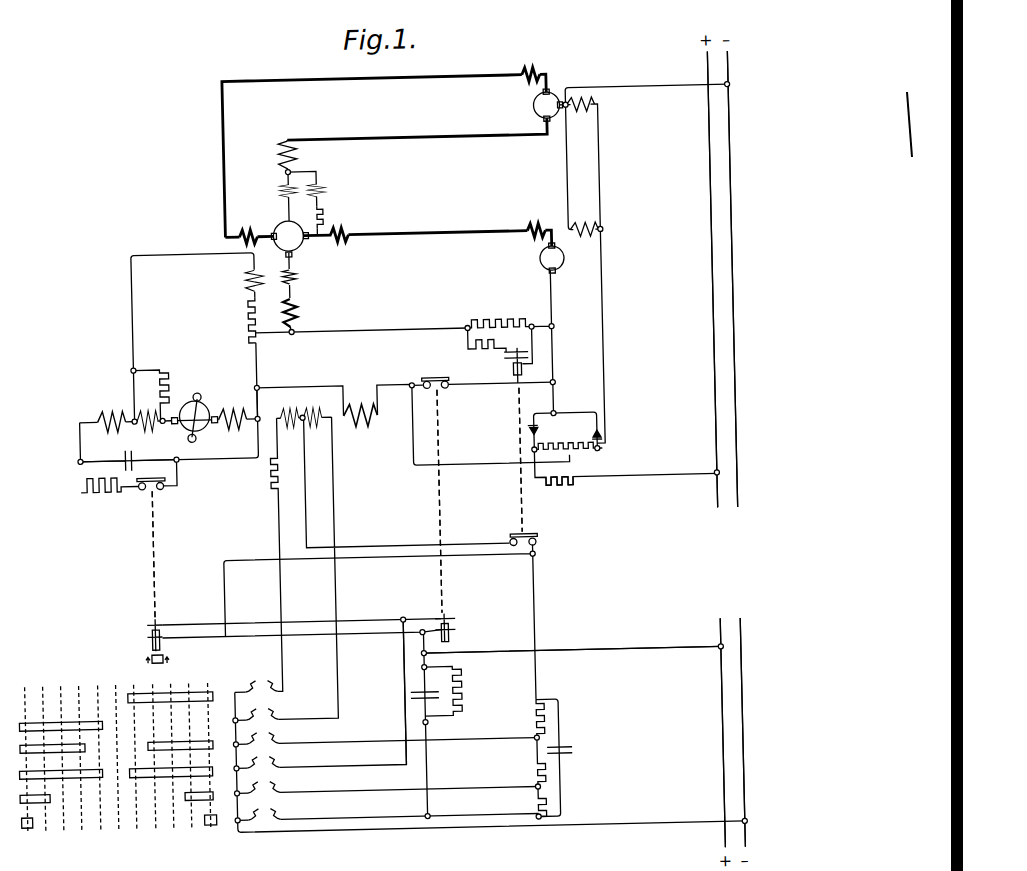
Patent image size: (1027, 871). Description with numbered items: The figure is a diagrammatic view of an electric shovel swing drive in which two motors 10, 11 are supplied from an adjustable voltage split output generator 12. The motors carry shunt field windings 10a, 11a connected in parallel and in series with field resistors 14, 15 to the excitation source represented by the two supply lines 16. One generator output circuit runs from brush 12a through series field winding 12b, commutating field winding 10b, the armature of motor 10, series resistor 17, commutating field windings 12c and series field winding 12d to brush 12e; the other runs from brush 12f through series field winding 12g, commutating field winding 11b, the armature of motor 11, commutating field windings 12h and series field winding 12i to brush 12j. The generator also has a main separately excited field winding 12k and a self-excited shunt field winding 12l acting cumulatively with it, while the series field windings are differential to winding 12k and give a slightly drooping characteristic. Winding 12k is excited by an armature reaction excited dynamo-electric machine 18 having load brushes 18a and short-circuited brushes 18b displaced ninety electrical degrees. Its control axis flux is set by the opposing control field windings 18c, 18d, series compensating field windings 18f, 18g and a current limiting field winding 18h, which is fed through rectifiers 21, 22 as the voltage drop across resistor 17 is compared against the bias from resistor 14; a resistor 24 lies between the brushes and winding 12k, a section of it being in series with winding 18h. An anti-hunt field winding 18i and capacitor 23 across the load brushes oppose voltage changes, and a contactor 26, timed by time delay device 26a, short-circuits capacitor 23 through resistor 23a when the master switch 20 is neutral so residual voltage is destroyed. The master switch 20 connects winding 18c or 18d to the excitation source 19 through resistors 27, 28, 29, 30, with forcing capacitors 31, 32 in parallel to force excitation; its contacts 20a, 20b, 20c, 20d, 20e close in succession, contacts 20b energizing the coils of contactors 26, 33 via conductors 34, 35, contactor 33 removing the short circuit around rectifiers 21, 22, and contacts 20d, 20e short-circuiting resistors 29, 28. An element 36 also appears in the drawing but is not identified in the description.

The motor 10 is at (544, 261).
The shunt field winding 10a is at (590, 223).
The motor commutating field winding 10b is at (542, 224).
The motor 11 is at (540, 106).
The shunt field winding 11a is at (588, 114).
The motor commutating field winding 11b is at (543, 68).
The adjustable voltage generator 12 is at (303, 245).
The brush 12a is at (313, 233).
The series field winding 12b is at (347, 226).
The commutating field windings 12c is at (301, 309).
The series field winding 12d is at (301, 275).
The brush 12e is at (289, 251).
The brush 12f is at (277, 227).
The series field winding 12g is at (250, 224).
The commutating field windings 12h is at (284, 155).
The series field winding 12i is at (286, 187).
The brush 12j is at (318, 218).
The main separately excited field winding 12k is at (250, 271).
The self-excited shunt field winding 12l is at (332, 186).
The field resistor 14 is at (553, 446).
The field resistor 15 is at (562, 486).
The supply lines 16 is at (736, 270).
The series resistor 17 is at (502, 319).
The dynamo-electric machine 18 is at (186, 424).
The load brushes 18a is at (175, 418).
The short circuited brushes 18b is at (197, 386).
The main control field winding 18c is at (291, 422).
The main control field winding 18d is at (314, 422).
The series compensating field winding 18f is at (150, 402).
The series compensating field winding 18g is at (234, 424).
The current limiting field winding 18h is at (361, 422).
The anti-hunt field winding 18i is at (112, 402).
The excitation source 19 is at (736, 731).
The master switch 20 is at (118, 647).
The cam actuated contacts 20a is at (262, 679).
The cam actuated contacts 20b is at (266, 760).
The contacts 20c is at (266, 736).
The cam actuated contacts 20d is at (266, 784).
The cam actuated contacts 20e is at (266, 810).
The rectifier 21 is at (528, 428).
The rectifier 22 is at (604, 437).
The capacitor 23 is at (125, 446).
The resistor 23a is at (105, 486).
The resistor 24 is at (250, 318).
The contactor 26 is at (153, 519).
The time delay device 26a is at (160, 650).
The resistor 27 is at (456, 696).
The resistor 28 is at (530, 799).
The resistor 29 is at (530, 769).
The resistor 30 is at (530, 719).
The capacitor 31 is at (413, 698).
The capacitor 32 is at (566, 752).
The contactor 33 is at (440, 581).
The conductor 34 is at (613, 650).
The conductor 35 is at (399, 677).
The relay switch 36 is at (518, 513).